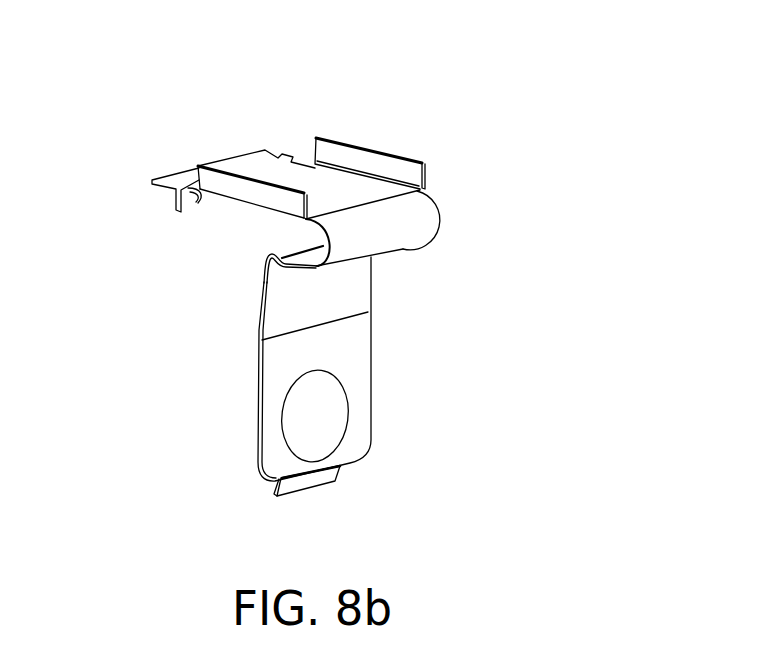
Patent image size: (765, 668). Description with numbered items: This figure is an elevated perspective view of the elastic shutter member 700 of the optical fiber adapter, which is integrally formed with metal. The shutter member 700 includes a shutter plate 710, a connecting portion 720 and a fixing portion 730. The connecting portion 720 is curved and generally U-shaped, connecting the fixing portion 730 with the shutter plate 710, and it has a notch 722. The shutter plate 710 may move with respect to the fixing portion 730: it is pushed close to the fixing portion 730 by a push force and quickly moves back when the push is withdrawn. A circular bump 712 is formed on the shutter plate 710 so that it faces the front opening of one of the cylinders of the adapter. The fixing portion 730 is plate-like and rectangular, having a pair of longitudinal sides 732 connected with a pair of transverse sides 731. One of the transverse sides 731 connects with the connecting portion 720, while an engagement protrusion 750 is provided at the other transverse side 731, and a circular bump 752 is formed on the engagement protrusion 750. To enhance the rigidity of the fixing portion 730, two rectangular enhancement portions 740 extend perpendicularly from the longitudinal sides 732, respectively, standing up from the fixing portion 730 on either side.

The shutter member 700 is at (424, 95).
The shutter plate 710 is at (353, 355).
The circular bump 712 is at (333, 412).
The connecting portion 720 is at (382, 227).
The notch 722 is at (300, 235).
The fixing portion 730 is at (289, 176).
The transverse sides 731 is at (373, 202).
The longitudinal sides 732 is at (257, 204).
The enhancement portions 740 is at (229, 176).
The engagement protrusion 750 is at (183, 198).
The circular bump 752 is at (196, 204).